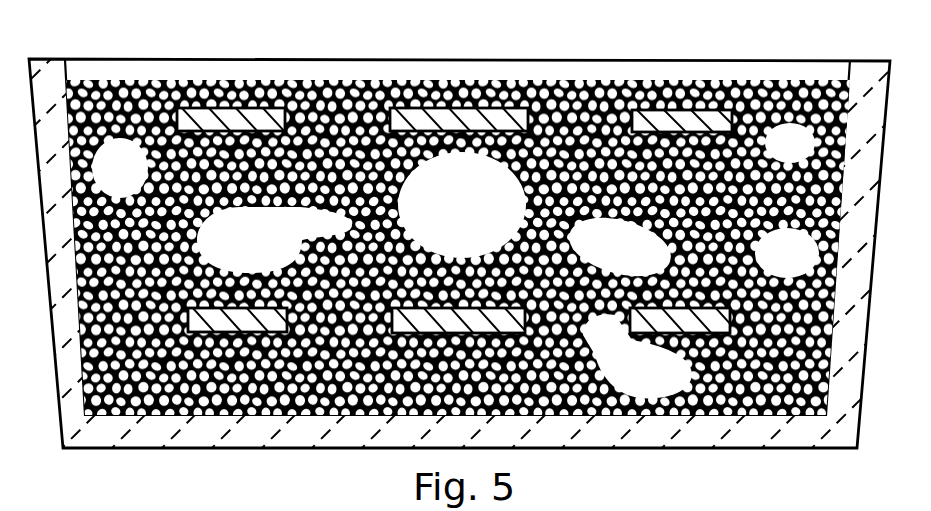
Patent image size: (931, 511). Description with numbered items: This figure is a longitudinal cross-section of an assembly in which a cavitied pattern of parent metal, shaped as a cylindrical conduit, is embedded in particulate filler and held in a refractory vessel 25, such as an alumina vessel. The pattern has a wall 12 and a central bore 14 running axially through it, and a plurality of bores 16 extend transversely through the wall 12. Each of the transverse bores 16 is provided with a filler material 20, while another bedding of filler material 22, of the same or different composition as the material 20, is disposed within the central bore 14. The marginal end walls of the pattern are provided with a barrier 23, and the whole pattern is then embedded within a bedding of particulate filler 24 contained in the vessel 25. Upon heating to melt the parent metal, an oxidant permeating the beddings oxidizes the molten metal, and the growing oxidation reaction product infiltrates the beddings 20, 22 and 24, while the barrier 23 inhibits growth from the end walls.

The wall 12 is at (478, 89).
The central bore 14 is at (710, 101).
The bores 16 is at (313, 100).
The filler material 20 is at (358, 98).
The bedding of filler material 22 is at (473, 232).
The barrier 23 is at (156, 163).
The bedding of particulate filler 24 is at (801, 267).
The refractory vessel 25 is at (855, 301).